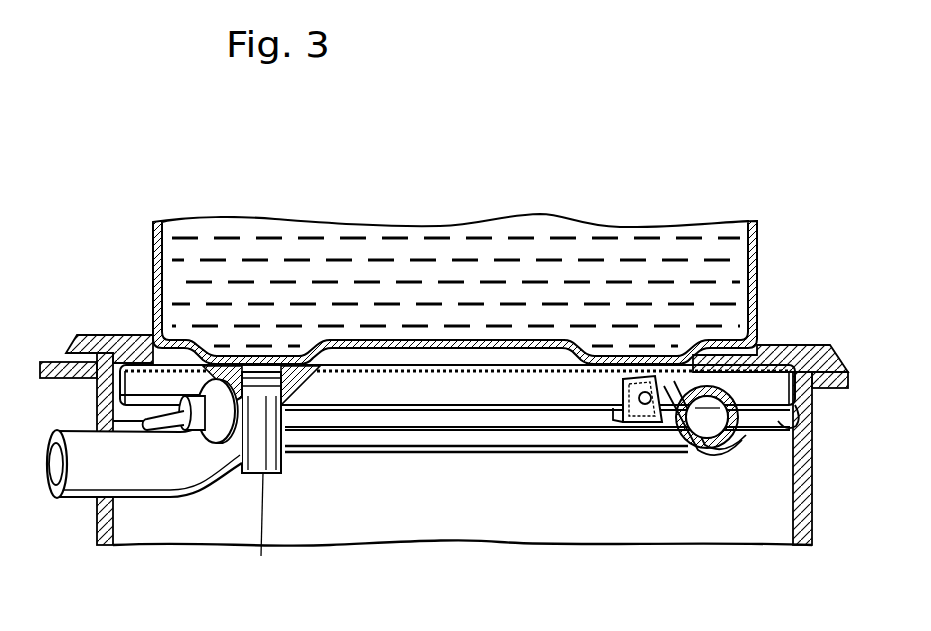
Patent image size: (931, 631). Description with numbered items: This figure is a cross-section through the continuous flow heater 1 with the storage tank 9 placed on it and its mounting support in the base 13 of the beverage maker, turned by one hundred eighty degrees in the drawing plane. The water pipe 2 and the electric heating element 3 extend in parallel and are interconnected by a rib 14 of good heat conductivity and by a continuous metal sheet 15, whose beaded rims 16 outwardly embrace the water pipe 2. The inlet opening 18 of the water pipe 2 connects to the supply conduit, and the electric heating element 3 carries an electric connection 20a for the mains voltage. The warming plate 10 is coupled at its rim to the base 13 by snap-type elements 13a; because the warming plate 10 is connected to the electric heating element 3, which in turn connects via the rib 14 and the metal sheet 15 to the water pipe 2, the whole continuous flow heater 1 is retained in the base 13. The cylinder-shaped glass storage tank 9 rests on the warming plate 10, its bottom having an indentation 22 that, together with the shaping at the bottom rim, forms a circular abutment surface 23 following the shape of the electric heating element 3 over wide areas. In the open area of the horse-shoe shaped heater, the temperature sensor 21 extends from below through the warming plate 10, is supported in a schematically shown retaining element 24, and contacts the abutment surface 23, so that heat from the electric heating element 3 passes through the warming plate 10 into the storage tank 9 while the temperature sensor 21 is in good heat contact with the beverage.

The continuous flow heater 1 is at (698, 474).
The water pipe 2 is at (723, 374).
The electric heating element 3 is at (634, 422).
The storage tank 9 is at (153, 240).
The warming plate 10 is at (387, 374).
The base 13 is at (803, 470).
The snap-type elements 13a is at (792, 345).
The rib 14 is at (652, 423).
The metal sheet 15 is at (482, 414).
The rims 16 is at (714, 448).
The inlet opening 18 is at (72, 492).
The electric connection 20a is at (160, 413).
The temperature sensor 21 is at (243, 474).
The indentation 22 is at (455, 344).
The abutment surface 23 is at (262, 357).
The retaining element 24 is at (320, 412).